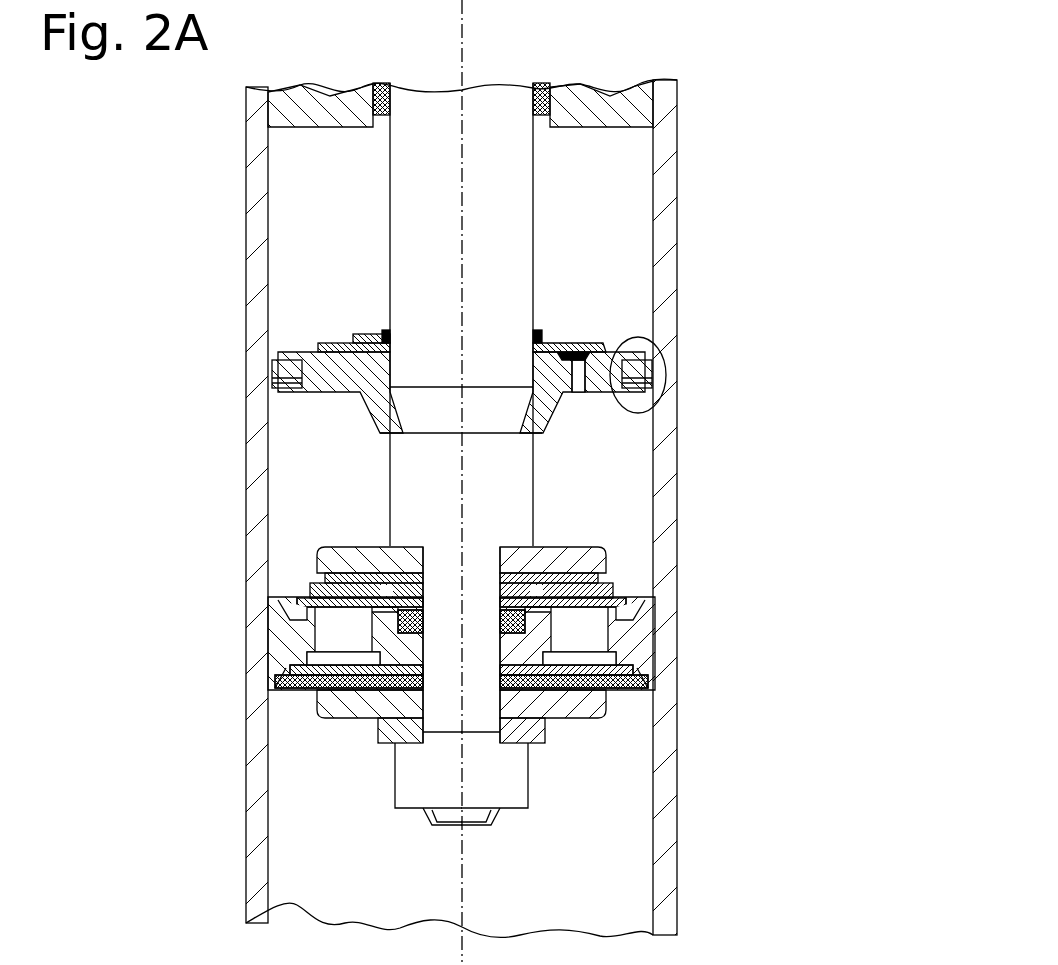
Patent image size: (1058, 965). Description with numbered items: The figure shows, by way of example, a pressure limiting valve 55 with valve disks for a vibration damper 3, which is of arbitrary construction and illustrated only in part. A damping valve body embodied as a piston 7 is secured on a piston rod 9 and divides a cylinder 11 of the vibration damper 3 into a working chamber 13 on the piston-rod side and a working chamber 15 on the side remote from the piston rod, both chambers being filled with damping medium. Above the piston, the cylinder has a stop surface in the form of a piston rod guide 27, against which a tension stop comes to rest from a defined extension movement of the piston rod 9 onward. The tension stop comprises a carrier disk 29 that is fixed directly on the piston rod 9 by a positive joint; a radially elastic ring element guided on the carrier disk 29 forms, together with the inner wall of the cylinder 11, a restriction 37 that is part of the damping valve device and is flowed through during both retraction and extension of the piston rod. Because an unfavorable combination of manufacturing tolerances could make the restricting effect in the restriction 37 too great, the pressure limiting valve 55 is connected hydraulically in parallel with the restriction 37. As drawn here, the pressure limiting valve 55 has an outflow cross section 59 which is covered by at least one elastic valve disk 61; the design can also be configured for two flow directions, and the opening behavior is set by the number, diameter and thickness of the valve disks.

The vibration damper 3 is at (178, 356).
The piston 7 is at (633, 646).
The piston rod 9 is at (510, 107).
The cylinder 11 is at (658, 833).
The working chamber on the piston-rod side 13 is at (605, 190).
The working chamber on the side remote from the piston rod 15 is at (590, 896).
The piston rod guide 27 is at (613, 97).
The carrier disk 29 is at (350, 385).
The restriction 37 is at (642, 408).
The pressure limiting valve 55 is at (577, 396).
The outflow cross section 59 is at (650, 352).
The elastic valve disk 61 is at (597, 337).